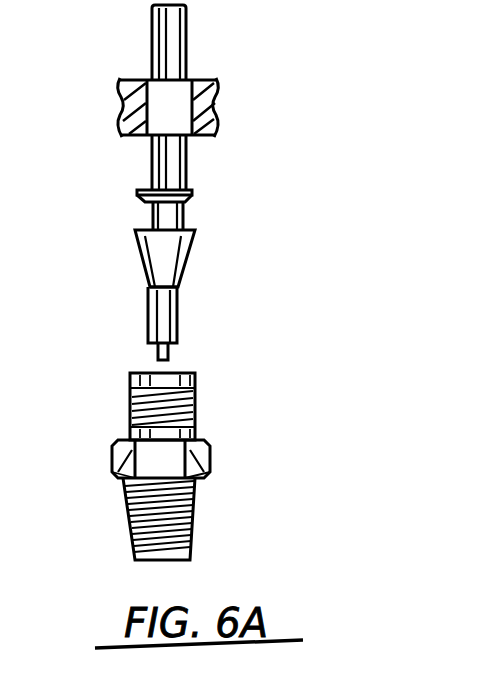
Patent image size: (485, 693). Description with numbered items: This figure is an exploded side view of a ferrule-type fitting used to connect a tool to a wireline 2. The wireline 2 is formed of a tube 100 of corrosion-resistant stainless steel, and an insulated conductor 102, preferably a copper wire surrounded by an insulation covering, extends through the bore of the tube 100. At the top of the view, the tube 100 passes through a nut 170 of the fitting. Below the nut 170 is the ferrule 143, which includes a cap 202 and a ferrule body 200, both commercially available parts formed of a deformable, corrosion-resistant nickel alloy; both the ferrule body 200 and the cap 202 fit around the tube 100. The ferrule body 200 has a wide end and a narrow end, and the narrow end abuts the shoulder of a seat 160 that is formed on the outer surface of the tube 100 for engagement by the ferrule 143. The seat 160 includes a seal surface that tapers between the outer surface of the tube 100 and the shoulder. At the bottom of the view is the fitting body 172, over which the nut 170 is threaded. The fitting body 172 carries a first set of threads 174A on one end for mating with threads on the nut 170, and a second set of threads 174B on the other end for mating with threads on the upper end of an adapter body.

The wireline 2 is at (187, 43).
The nut 170 is at (218, 103).
The cap 202 is at (137, 193).
The ferrule 143 is at (198, 244).
The ferrule body 200 is at (140, 260).
The seat 160 is at (187, 286).
The tube 100 is at (177, 323).
The insulated conductor 102 is at (150, 355).
The first set of threads 174A is at (208, 400).
The fitting body 172 is at (217, 457).
The second set of threads 174B is at (200, 528).